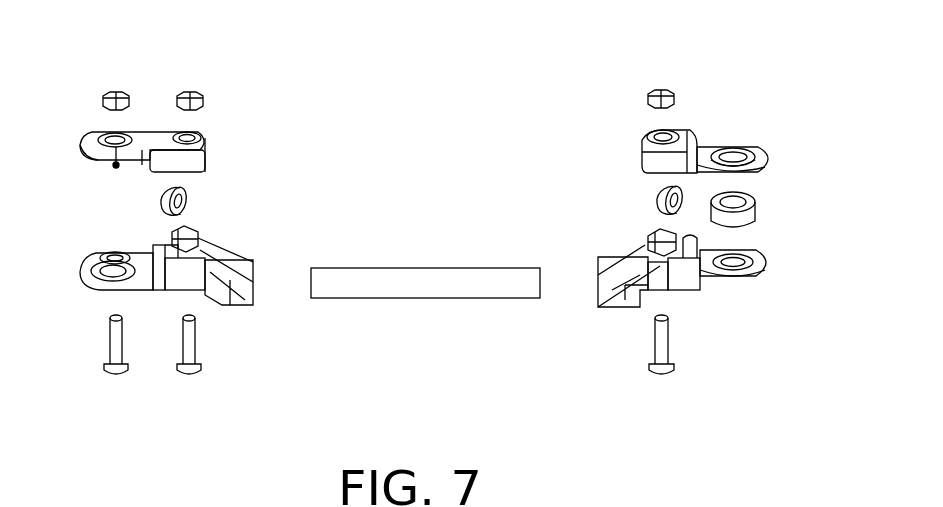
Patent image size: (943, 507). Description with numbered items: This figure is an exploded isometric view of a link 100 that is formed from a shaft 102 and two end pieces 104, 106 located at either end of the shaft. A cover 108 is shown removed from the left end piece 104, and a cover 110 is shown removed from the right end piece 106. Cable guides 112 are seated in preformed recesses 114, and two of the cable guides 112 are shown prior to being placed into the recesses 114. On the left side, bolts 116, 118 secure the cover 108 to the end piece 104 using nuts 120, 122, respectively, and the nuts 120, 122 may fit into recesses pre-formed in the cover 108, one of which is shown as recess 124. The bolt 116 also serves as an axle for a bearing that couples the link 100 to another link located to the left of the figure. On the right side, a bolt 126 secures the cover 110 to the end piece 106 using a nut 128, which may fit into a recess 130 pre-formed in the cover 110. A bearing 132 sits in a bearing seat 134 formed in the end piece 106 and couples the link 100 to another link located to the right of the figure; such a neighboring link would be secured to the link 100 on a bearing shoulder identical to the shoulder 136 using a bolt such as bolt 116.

The link 100 is at (458, 108).
The shaft 102 is at (400, 283).
The end piece 104 is at (207, 287).
The end piece 106 is at (600, 297).
The cover 108 is at (83, 148).
The cover 110 is at (697, 147).
The cable guide 112 is at (187, 200).
The recess 114 is at (160, 232).
The bolt 116 is at (118, 348).
The bolt 118 is at (193, 347).
The nut 120 is at (125, 95).
The nut 122 is at (200, 96).
The recess 124 is at (203, 133).
The bolt 126 is at (660, 337).
The nut 128 is at (648, 95).
The recess 130 is at (645, 133).
The bearing 132 is at (752, 222).
The bearing seat 134 is at (753, 277).
The bearing shoulder 136 is at (110, 252).